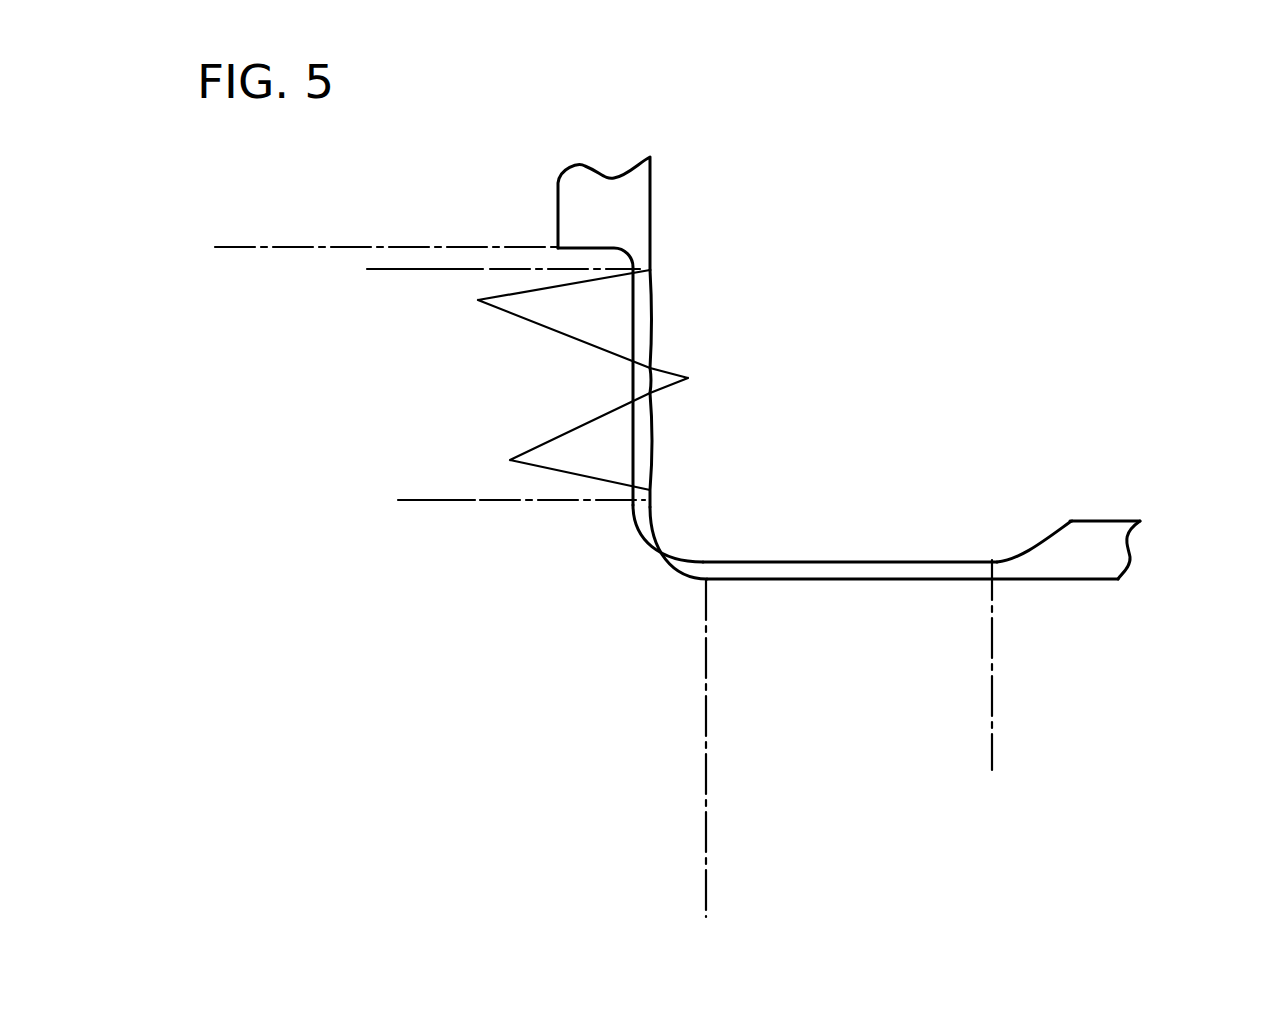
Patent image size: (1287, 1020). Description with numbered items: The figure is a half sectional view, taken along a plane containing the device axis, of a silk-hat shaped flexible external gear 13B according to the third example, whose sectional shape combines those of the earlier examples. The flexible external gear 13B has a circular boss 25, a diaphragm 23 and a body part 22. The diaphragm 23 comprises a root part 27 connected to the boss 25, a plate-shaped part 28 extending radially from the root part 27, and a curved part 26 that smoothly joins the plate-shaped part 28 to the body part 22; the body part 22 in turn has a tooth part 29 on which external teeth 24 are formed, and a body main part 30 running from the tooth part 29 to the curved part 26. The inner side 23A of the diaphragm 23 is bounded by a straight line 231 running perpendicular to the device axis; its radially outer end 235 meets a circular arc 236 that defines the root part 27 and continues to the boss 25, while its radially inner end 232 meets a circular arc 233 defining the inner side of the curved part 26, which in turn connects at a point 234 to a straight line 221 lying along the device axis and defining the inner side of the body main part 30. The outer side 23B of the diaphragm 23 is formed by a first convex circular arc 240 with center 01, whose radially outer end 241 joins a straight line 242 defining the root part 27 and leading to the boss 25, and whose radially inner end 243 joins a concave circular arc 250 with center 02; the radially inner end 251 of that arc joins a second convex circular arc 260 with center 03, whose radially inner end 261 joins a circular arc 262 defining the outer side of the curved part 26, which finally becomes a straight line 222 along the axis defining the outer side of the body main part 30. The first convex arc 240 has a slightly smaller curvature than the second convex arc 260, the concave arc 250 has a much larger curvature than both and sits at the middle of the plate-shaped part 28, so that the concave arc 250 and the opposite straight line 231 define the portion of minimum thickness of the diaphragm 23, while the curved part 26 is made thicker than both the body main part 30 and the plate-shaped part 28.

The flexible external gear 13B is at (920, 318).
The body part 22 is at (706, 797).
The diaphragm 23 is at (238, 247).
The inner surface of diaphragm 23A is at (572, 562).
The outer surface of diaphragm 23B is at (672, 216).
The external teeth 24 is at (1100, 527).
The boss 25 is at (663, 170).
The curved part 26 is at (705, 757).
The root part 27 is at (387, 318).
The plate-shaped part 28 is at (428, 269).
The tooth part 29 is at (992, 758).
The body main part 30 is at (706, 758).
The center of first convex circular arc 01 is at (543, 319).
The center of concave circular arc 02 is at (687, 378).
The center of second convex circular arc 03 is at (562, 441).
The straight line 221 is at (842, 580).
The straight line 222 is at (828, 562).
The straight line 231 is at (633, 380).
The radially inner end 232 is at (630, 505).
The circular arc 233 is at (657, 558).
The point 234 is at (702, 583).
The radially outer end 235 is at (648, 262).
The circular arc 236 is at (615, 258).
The first convex circular arc 240 is at (650, 322).
The radially outer end 241 is at (650, 270).
The straight line 242 is at (650, 255).
The radially inner end 243 is at (648, 363).
The concave circular arc 250 is at (648, 378).
The radially inner end 251 is at (648, 393).
The second convex circular arc 260 is at (652, 452).
The radially inner end 261 is at (652, 487).
The circular arc 262 is at (676, 530).